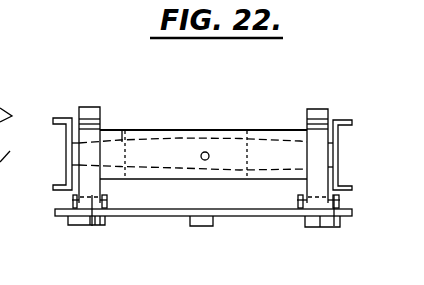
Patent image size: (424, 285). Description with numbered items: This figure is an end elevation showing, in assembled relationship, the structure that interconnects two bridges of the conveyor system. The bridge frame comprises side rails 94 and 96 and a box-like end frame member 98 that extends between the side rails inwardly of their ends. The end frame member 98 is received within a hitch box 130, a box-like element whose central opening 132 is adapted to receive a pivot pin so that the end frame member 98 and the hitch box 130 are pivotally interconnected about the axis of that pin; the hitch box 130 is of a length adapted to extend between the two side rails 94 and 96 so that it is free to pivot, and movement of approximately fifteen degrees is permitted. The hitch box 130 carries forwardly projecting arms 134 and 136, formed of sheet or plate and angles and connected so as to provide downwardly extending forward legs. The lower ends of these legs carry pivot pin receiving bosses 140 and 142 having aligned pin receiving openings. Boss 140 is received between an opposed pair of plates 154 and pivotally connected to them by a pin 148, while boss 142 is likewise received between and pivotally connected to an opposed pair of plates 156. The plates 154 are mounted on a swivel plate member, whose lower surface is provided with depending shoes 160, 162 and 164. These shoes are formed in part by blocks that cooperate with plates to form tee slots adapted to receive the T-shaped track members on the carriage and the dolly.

The side rail 94 is at (338, 168).
The side rail 96 is at (66, 118).
The end frame member 98 is at (156, 131).
The hitch box 130 is at (254, 130).
The central opening 132 is at (206, 152).
The forwardly projecting arm 134 is at (90, 110).
The forwardly projecting arm 136 is at (320, 112).
The pivot pin receiving boss 140 is at (92, 226).
The pivot pin receiving boss 142 is at (310, 220).
The pin 148 is at (107, 201).
The plates 154 is at (72, 200).
The plates 156 is at (340, 218).
The shoe 160 is at (75, 220).
The shoe 162 is at (205, 222).
The shoe 164 is at (320, 227).